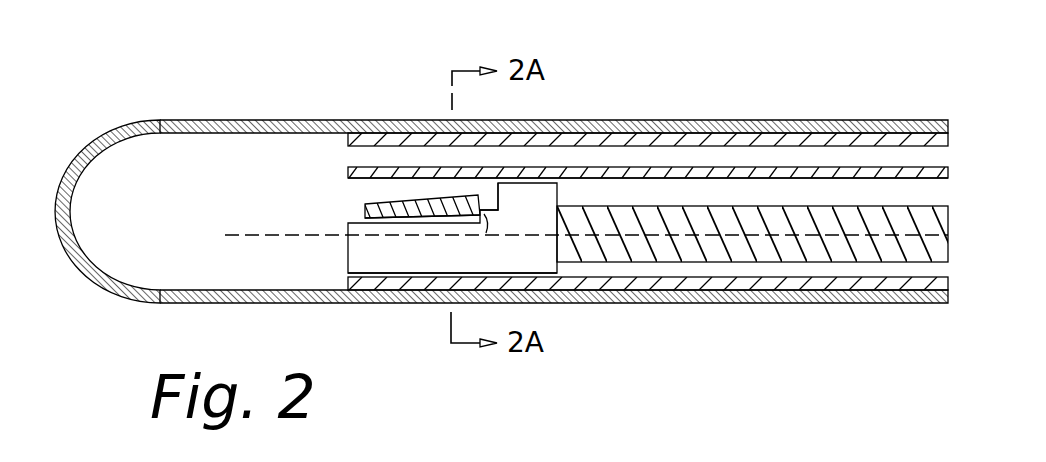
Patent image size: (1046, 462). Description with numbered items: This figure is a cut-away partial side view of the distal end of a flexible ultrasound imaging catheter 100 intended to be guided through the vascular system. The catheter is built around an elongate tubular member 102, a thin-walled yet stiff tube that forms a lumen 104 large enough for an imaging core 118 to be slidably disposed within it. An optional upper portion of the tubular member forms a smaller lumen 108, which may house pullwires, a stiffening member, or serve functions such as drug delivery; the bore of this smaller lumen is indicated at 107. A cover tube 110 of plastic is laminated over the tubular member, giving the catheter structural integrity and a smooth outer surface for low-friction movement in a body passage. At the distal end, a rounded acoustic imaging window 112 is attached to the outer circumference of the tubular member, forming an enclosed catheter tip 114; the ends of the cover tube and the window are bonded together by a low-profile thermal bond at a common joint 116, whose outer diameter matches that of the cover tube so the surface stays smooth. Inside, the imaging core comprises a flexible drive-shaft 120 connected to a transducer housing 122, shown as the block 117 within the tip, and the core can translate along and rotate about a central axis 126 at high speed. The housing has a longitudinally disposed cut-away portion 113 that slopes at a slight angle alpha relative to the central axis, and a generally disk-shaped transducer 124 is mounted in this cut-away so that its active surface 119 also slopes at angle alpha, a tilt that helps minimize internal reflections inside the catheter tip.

The flexible ultrasound imaging catheter 100 is at (497, 194).
The elongate tubular member 102 is at (747, 137).
The lumen 104 is at (851, 201).
The inner lumen 107 is at (648, 178).
The smaller lumen 108 is at (648, 139).
The cover tube 110 is at (813, 117).
The acoustic imaging window 112 is at (497, 181).
The cut-away portion 113 is at (488, 208).
The catheter tip 114 is at (72, 162).
The common joint 116 is at (668, 114).
The mounting block 117 is at (418, 218).
The imaging core 118 is at (270, 200).
The active surface 119 is at (394, 226).
The flexible drive-shaft 120 is at (815, 247).
The transducer housing 122 is at (393, 262).
The transducer 124 is at (388, 220).
The central axis 126 is at (262, 238).